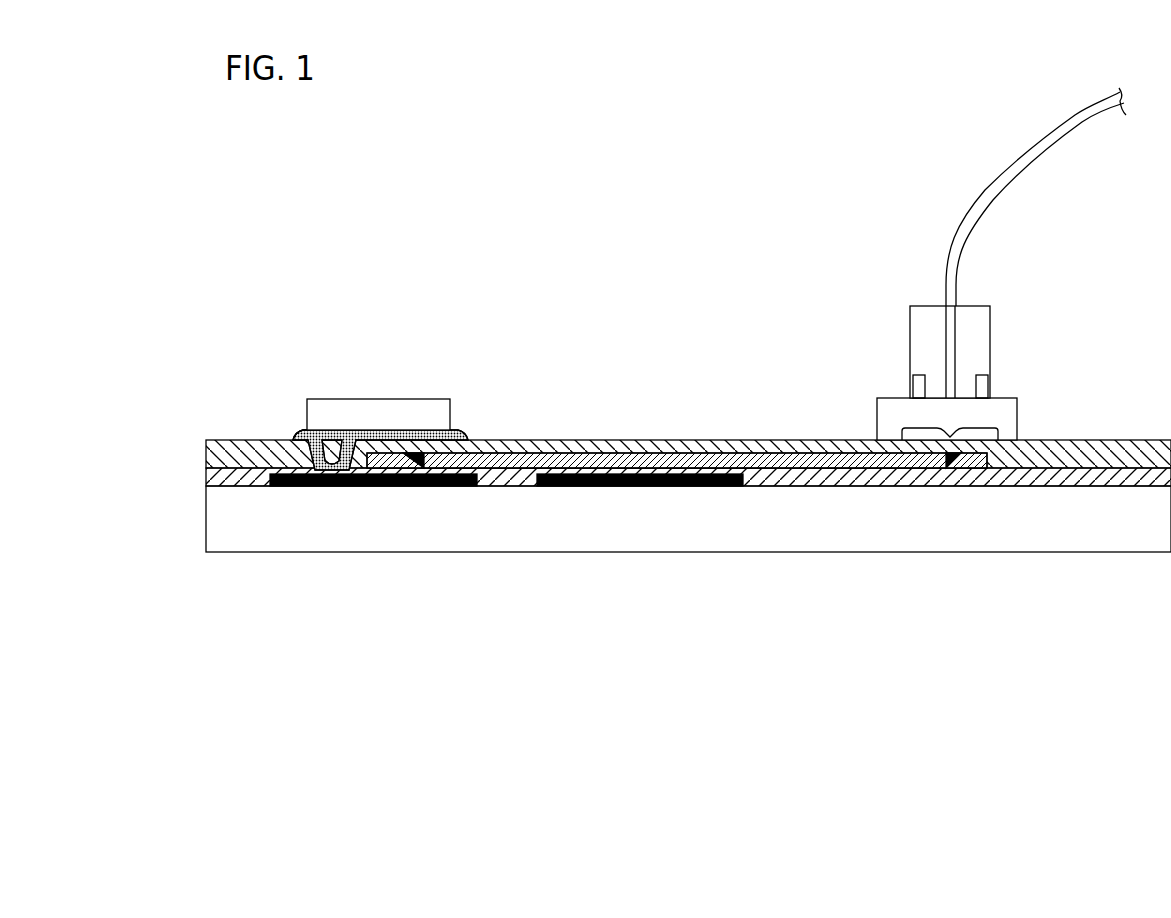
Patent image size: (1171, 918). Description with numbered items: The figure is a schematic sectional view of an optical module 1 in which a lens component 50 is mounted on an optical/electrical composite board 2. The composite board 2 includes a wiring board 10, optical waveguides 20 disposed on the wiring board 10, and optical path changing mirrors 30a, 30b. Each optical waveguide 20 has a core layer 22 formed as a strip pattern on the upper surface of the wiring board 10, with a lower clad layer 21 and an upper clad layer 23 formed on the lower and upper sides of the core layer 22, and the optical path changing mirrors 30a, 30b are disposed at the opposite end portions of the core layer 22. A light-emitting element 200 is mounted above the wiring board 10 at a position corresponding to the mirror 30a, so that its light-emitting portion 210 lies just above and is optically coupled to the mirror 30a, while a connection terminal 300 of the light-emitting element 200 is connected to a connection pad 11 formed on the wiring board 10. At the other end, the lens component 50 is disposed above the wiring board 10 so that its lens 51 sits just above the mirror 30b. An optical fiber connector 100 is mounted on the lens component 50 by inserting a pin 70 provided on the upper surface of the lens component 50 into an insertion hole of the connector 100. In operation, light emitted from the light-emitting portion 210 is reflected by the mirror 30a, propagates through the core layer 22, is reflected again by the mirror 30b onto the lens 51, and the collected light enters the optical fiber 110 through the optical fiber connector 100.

The optical module 1 is at (465, 212).
The optical/electrical composite board 2 is at (564, 596).
The wiring board 10 is at (770, 532).
The connection pad 11 is at (355, 487).
The optical waveguide 20 is at (688, 463).
The clad layer 21 is at (633, 470).
The core layer 22 is at (620, 455).
The clad layer 23 is at (605, 440).
The optical path changing mirror 30a is at (412, 466).
The optical path changing mirror 30b is at (949, 466).
The lens component 50 is at (1018, 412).
The lens 51 is at (950, 437).
The pin 70 is at (912, 380).
The optical fiber connector 100 is at (908, 334).
The optical fiber 110 is at (976, 206).
The light-emitting element 200 is at (414, 399).
The light-emitting portion 210 is at (425, 432).
The connection terminal 300 is at (302, 430).